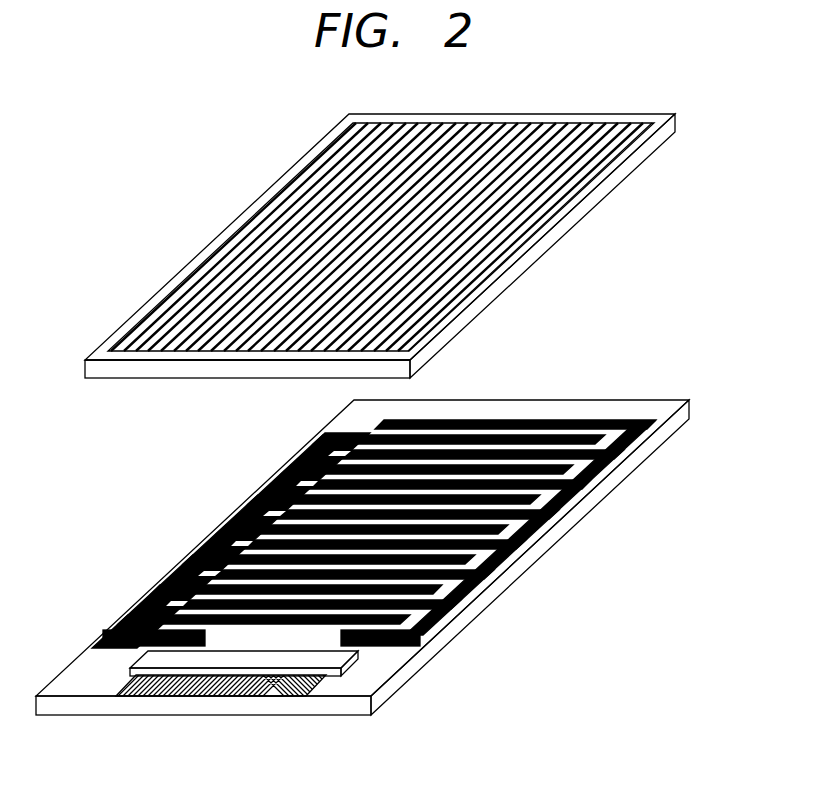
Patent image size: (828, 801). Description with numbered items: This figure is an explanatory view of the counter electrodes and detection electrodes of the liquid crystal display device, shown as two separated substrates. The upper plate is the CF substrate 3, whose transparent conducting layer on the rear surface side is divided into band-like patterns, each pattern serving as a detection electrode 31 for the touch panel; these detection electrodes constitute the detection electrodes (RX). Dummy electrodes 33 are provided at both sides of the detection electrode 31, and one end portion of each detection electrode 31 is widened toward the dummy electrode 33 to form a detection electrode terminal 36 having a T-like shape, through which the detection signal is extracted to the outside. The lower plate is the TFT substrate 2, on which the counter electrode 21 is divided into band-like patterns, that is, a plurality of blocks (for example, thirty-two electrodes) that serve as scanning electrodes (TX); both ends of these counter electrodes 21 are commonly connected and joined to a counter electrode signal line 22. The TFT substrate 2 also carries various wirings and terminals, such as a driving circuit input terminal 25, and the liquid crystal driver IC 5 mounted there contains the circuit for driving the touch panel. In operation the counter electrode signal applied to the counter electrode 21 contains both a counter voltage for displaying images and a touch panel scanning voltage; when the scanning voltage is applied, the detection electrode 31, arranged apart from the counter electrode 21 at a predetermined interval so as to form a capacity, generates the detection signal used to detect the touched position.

The TFT substrate 2 is at (514, 391).
The counter electrode 21 is at (559, 414).
The counter electrode signal line 22 is at (564, 504).
The driving circuit input terminal 25 is at (174, 689).
The liquid crystal driver IC 5 is at (345, 656).
The CF substrate 3 is at (441, 106).
The detection electrode 31 is at (516, 120).
The dummy electrode 33 is at (566, 125).
The detection electrode terminal 36 is at (142, 356).